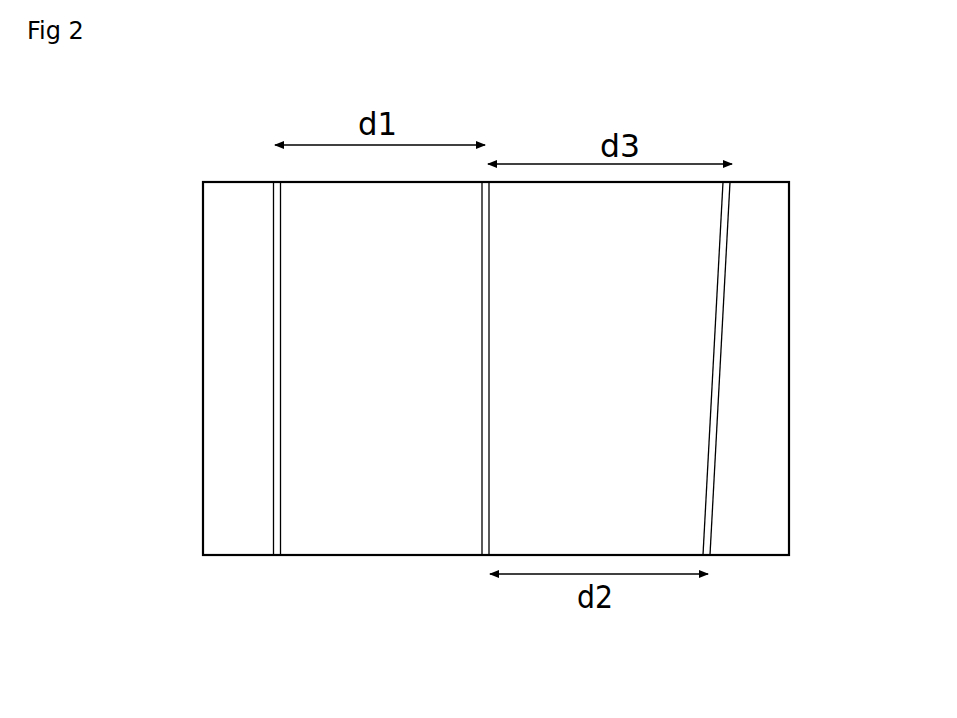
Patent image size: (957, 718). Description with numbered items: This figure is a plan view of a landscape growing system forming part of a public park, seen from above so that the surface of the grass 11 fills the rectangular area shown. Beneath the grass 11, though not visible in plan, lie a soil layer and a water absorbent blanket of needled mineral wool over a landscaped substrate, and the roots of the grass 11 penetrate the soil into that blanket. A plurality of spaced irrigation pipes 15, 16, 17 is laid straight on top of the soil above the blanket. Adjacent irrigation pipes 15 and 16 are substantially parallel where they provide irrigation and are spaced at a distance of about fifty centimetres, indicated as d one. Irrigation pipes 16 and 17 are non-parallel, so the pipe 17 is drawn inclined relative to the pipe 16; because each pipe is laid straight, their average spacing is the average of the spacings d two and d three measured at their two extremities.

The grass 11 is at (235, 198).
The irrigation pipe 15 is at (275, 528).
The irrigation pipe 16 is at (483, 543).
The irrigation pipe 17 is at (726, 220).